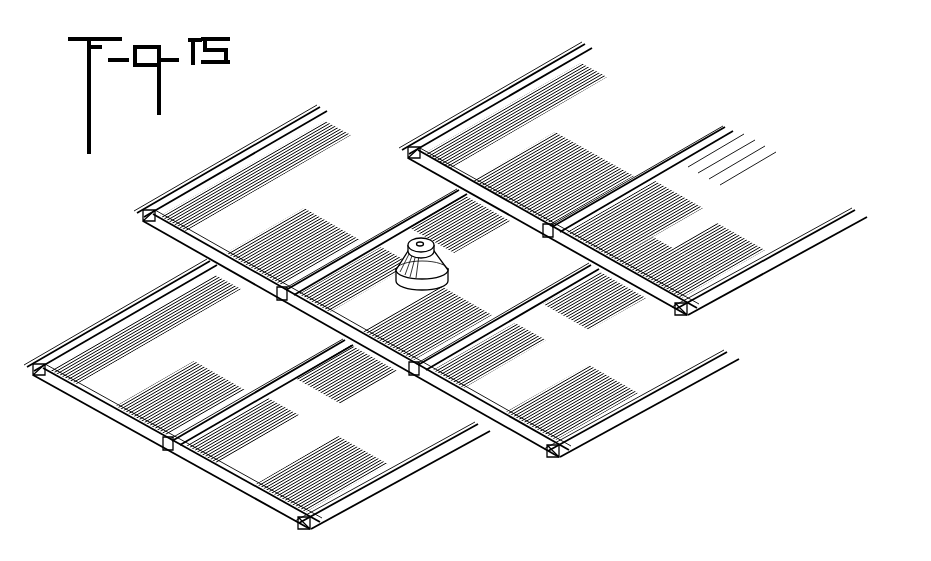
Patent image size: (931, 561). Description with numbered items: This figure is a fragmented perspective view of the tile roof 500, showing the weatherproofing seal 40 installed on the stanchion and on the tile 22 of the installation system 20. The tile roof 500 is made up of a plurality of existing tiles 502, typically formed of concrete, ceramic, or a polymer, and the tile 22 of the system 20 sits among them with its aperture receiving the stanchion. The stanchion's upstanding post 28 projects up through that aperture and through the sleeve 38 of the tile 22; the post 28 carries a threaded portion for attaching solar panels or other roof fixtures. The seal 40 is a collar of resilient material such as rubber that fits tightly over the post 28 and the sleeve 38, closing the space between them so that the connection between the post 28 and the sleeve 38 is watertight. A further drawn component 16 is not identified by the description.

The tile roof 500 is at (721, 64).
The existing tiles 502 is at (762, 198).
The panel 16 is at (607, 207).
The system for installing a stanchion 20 is at (384, 217).
The tile 22 is at (497, 245).
The upstanding post 28 is at (433, 244).
The weatherproofing seal 40 is at (434, 263).
The sleeve 38 is at (423, 288).